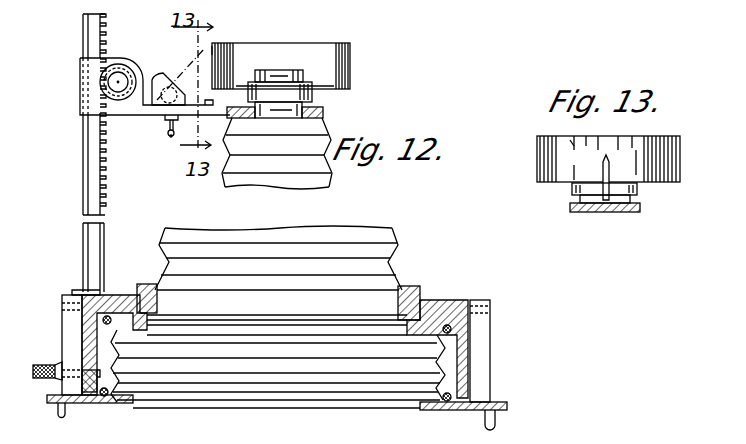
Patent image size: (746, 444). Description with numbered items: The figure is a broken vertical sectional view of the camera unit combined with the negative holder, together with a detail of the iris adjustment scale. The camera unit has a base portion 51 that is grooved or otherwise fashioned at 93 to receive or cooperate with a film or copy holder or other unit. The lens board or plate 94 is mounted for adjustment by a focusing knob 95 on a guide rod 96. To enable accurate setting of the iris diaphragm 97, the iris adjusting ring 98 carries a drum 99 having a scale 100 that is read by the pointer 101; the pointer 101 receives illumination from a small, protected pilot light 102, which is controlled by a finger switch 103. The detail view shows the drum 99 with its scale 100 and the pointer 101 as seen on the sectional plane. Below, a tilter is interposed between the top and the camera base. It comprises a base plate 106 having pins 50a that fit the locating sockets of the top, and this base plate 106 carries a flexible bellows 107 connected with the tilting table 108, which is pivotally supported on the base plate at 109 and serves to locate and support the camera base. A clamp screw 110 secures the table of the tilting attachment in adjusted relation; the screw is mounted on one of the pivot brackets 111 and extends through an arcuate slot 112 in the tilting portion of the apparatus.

In FIG. 12, the guide rod 96 is at (86, 45).
In FIG. 12, the focusing knob 95 is at (123, 70).
In FIG. 12, the pointer 101 is at (205, 68).
In FIG. 13, the pointer 101 is at (600, 168).
In FIG. 12, the pilot light 102 is at (150, 112).
In FIG. 12, the finger switch 103 is at (168, 138).
In FIG. 12, the scale 100 is at (218, 56).
In FIG. 13, the scale 100 is at (572, 142).
In FIG. 12, the iris adjusting ring 98 is at (267, 90).
In FIG. 13, the iris adjusting ring 98 is at (640, 192).
In FIG. 12, the iris diaphragm 97 is at (290, 72).
In FIG. 12, the drum 99 is at (350, 62).
In FIG. 13, the drum 99 is at (680, 155).
In FIG. 12, the lens board 94 is at (327, 113).
In FIG. 13, the lens board 94 is at (585, 212).
In FIG. 12, the base portion 51 is at (332, 182).
In FIG. 12, the flexible bellows 107 is at (215, 372).
In FIG. 12, the groove 93 is at (412, 300).
In FIG. 12, the tilting table 108 is at (460, 300).
In FIG. 12, the pivot 109 is at (68, 300).
In FIG. 12, the pivot bracket 111 is at (62, 322).
In FIG. 12, the clamp screw 110 is at (42, 355).
In FIG. 12, the arcuate slot 112 is at (88, 395).
In FIG. 12, the base plate 106 is at (505, 407).
In FIG. 12, the pins 50a is at (58, 418).